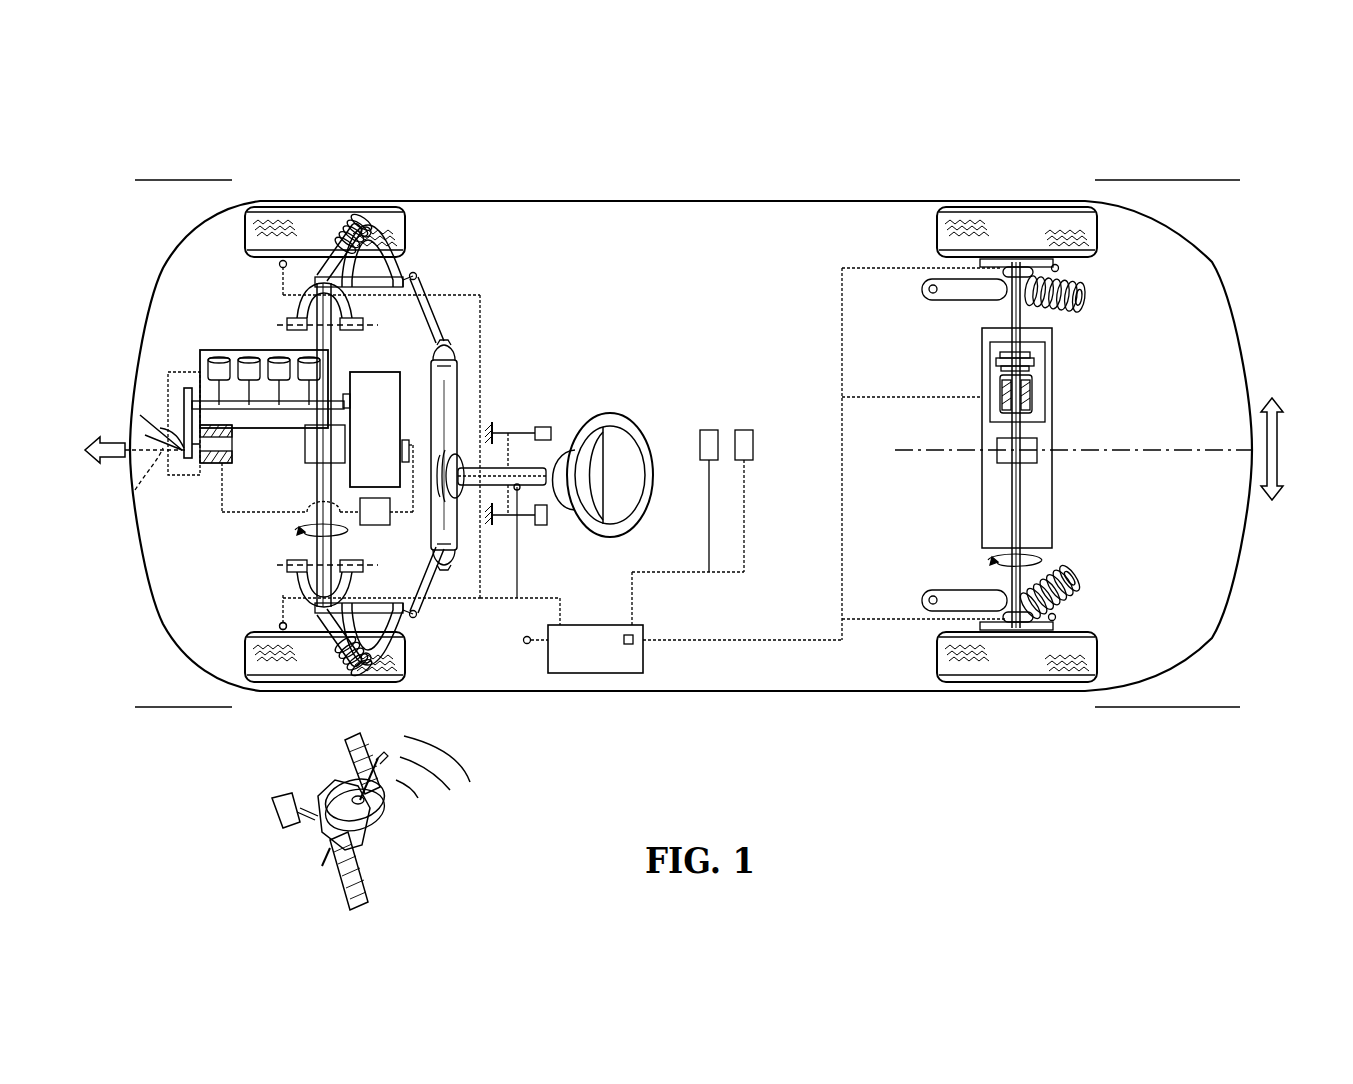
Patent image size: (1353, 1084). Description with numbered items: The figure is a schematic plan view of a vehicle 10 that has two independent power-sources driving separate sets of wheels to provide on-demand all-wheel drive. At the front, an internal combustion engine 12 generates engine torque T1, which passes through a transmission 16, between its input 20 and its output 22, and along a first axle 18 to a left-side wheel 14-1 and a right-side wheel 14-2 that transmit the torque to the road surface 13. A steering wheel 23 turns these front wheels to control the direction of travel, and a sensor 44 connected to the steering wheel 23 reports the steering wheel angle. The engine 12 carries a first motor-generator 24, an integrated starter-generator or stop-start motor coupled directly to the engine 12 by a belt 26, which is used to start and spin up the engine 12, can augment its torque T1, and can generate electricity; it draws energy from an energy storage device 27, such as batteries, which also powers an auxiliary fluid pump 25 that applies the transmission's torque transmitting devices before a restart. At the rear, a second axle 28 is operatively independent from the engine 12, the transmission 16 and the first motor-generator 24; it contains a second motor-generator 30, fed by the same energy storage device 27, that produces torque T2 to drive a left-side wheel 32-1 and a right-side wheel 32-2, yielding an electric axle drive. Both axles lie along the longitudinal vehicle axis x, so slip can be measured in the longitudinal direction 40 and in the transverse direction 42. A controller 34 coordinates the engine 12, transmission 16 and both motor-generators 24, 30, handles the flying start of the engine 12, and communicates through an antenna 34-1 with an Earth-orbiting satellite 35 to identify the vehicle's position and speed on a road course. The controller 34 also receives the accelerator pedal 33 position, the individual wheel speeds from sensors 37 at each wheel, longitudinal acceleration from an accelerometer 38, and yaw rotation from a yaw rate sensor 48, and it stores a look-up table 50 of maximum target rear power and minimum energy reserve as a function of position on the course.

The vehicle 10 is at (537, 171).
The internal combustion engine 12 is at (195, 346).
The road surface 13 is at (158, 221).
The left-side wheel 14-1 is at (304, 688).
The right-side wheel 14-2 is at (296, 207).
The transmission 16 is at (388, 423).
The first axle 18 is at (302, 551).
The input 20 is at (342, 425).
The output 22 is at (330, 480).
The steering wheel 23 is at (621, 425).
The first motor-generator 24 is at (216, 464).
The auxiliary fluid pump 25 is at (408, 440).
The belt 26 is at (185, 420).
The energy storage device 27 is at (385, 522).
The second axle 28 is at (1058, 425).
The second motor-generator 30 is at (1048, 368).
The left-side wheel 32-1 is at (1077, 688).
The right-side wheel 32-2 is at (1026, 205).
The vehicle accelerator pedal 33 is at (530, 468).
The controller 34 is at (643, 630).
The antenna 34-1 is at (526, 644).
The Earth-orbiting satellite 35 is at (318, 875).
The sensors 37 is at (678, 420).
The accelerometer 38 is at (700, 452).
The longitudinal direction 40 is at (118, 458).
The transverse direction 42 is at (1276, 450).
The sensor 44 is at (529, 468).
The yaw rate sensor 48 is at (744, 430).
The look-up table 50 is at (630, 645).
The torque T1 is at (295, 528).
The torque T2 is at (988, 556).
The vehicle axis x is at (142, 493).